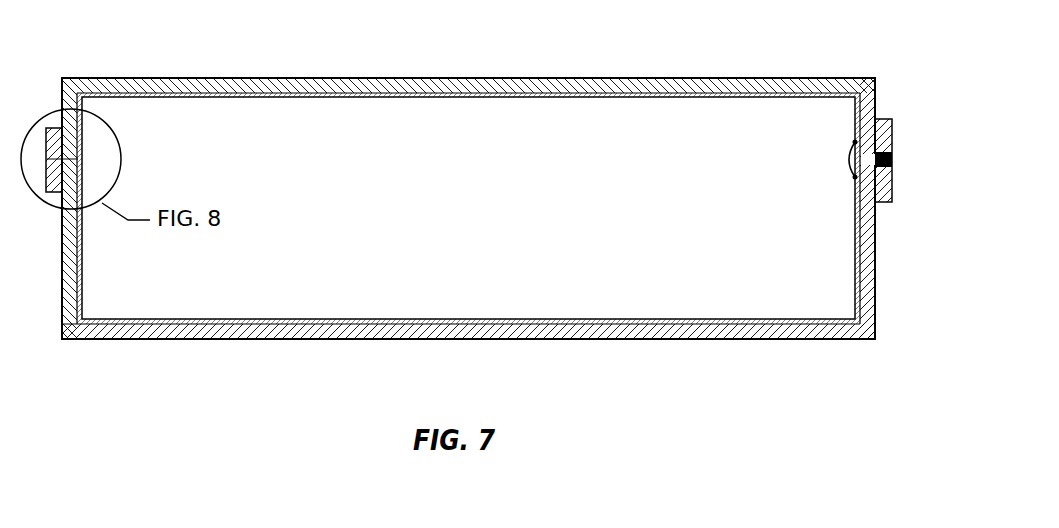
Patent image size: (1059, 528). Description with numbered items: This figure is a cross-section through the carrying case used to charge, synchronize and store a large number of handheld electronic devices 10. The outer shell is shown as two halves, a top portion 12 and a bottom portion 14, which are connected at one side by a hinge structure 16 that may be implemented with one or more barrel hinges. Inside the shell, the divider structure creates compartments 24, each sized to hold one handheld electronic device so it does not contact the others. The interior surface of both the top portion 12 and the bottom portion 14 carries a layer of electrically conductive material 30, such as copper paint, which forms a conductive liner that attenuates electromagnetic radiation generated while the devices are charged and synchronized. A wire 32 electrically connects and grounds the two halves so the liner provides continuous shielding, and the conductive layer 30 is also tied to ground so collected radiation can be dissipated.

The handheld electronic devices 10 is at (697, 42).
The top portion 12 is at (238, 78).
The bottom portion 14 is at (347, 339).
The hinge structure 16 is at (893, 156).
The compartments 24 is at (72, 159).
The electrically conductive material 30 is at (317, 98).
The wire 32 is at (847, 162).